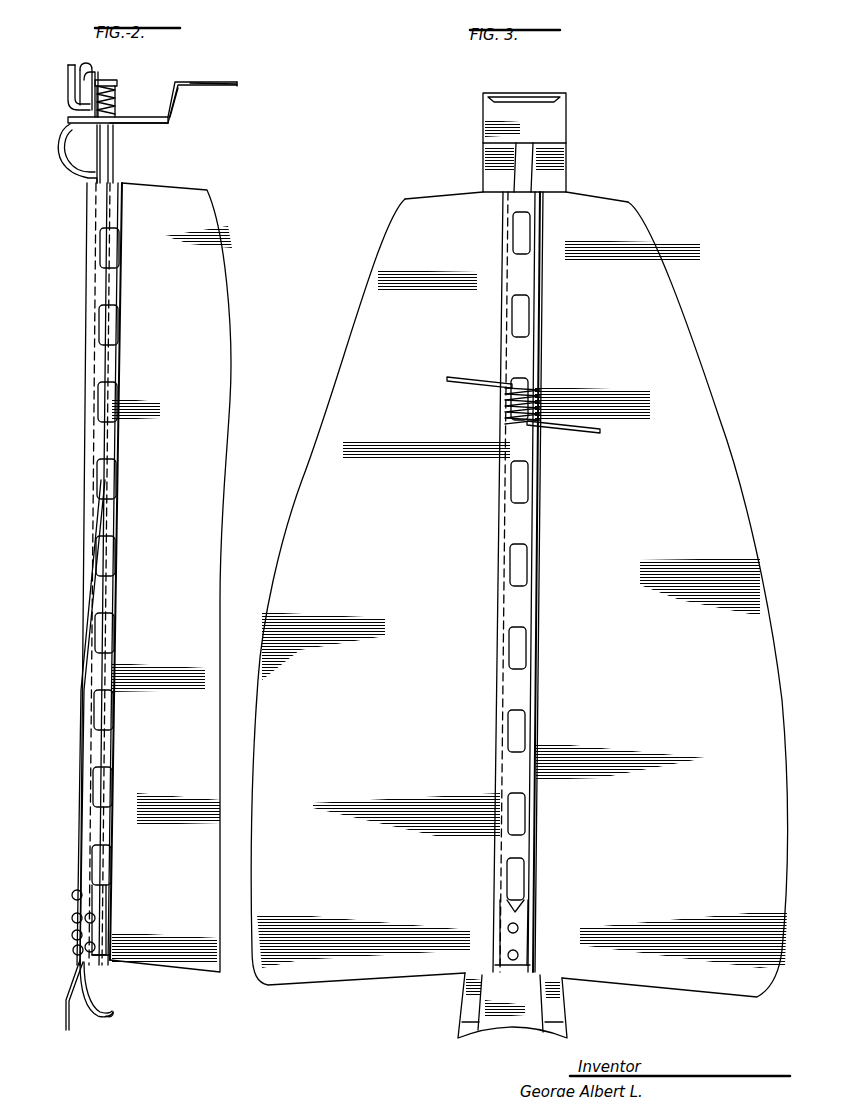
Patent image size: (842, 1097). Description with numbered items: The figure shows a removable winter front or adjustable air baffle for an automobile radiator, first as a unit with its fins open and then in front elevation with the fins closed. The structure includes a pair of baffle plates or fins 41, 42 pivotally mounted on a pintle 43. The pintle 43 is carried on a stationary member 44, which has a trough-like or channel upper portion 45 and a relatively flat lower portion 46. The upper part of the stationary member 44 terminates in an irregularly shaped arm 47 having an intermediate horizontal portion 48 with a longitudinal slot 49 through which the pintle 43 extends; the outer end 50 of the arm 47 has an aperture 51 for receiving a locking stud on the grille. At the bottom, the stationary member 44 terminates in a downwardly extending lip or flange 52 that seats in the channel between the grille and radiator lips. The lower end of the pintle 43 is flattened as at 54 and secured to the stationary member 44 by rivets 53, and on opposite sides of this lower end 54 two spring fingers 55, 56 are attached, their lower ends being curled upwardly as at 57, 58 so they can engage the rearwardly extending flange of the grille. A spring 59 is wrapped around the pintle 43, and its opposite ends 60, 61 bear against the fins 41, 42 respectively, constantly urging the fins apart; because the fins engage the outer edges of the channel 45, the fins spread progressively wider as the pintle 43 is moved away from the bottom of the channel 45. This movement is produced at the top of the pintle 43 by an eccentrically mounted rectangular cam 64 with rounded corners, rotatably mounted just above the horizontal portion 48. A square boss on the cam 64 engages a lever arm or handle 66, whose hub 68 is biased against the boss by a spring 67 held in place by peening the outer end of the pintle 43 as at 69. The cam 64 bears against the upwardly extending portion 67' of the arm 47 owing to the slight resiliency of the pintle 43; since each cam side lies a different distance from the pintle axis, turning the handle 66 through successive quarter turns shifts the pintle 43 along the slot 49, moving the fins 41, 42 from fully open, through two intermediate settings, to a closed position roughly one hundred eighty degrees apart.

In FIG. 2, the baffle plate or fin 41 is at (200, 215).
In FIG. 3, the baffle plate or fin 41 is at (372, 298).
In FIG. 3, the baffle plate or fin 42 is at (650, 302).
In FIG. 2, the pintle 43 is at (110, 166).
In FIG. 2, the stationary member 44 is at (82, 722).
In FIG. 2, the trough-like or channel upper portion 45 is at (94, 290).
In FIG. 2, the relatively flat lower portion 46 is at (80, 798).
In FIG. 2, the irregularly shaped arm 47 is at (182, 107).
In FIG. 2, the intermediate horizontal portion 48 is at (130, 126).
In FIG. 2, the longitudinal slot 49 is at (95, 128).
In FIG. 2, the outer end of arm 50 is at (240, 82).
In FIG. 3, the outer end of arm 50 is at (542, 96).
In FIG. 2, the aperture 51 is at (210, 82).
In FIG. 3, the aperture 51 is at (515, 96).
In FIG. 2, the downwardly extending lip or flange 52 is at (66, 1010).
In FIG. 2, the rivets 53 is at (70, 920).
In FIG. 3, the rivets 53 is at (508, 955).
In FIG. 2, the flattened lower end of pintle 54 is at (92, 925).
In FIG. 3, the flattened lower end of pintle 54 is at (520, 935).
In FIG. 2, the spring finger 55 is at (94, 993).
In FIG. 3, the spring finger 55 is at (466, 1000).
In FIG. 3, the spring finger 56 is at (552, 1012).
In FIG. 2, the curled lower end of spring finger 57 is at (118, 1014).
In FIG. 3, the curled lower end of spring finger 57 is at (466, 1026).
In FIG. 3, the curled lower end of spring finger 58 is at (568, 1023).
In FIG. 3, the spring 59 is at (538, 402).
In FIG. 3, the spring end 60 is at (476, 372).
In FIG. 3, the spring end 61 is at (580, 428).
In FIG. 2, the eccentrically mounted rectangular cam 64 is at (138, 117).
In FIG. 2, the lever arm or handle 66 is at (67, 88).
In FIG. 2, the spring 67 is at (97, 76).
In FIG. 2, the upwardly extending portion of arm 67' is at (179, 84).
In FIG. 2, the hub of handle 68 is at (84, 62).
In FIG. 2, the peened outer end of pintle 69 is at (112, 80).